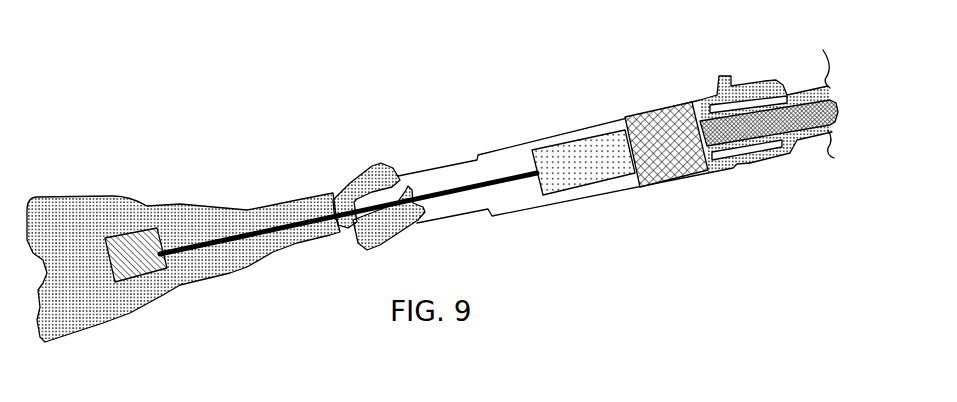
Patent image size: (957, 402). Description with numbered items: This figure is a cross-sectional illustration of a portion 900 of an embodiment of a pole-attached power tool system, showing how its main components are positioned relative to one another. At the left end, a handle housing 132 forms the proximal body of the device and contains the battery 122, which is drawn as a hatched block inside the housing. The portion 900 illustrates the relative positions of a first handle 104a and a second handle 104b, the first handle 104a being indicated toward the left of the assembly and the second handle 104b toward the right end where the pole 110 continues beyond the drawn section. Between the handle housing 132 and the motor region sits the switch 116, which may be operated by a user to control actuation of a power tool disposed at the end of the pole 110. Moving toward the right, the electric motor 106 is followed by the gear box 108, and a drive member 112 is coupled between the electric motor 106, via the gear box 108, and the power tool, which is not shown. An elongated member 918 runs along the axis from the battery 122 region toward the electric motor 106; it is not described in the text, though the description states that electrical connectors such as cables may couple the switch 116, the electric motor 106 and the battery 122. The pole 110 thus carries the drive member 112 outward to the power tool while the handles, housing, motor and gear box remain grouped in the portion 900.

The portion 900 is at (84, 134).
The first handle 104a is at (274, 180).
The second handle 104b is at (830, 172).
The handle housing 132 is at (113, 195).
The battery 122 is at (150, 279).
The tether wire 918 is at (280, 238).
The switch 116 is at (379, 165).
The electric motor 106 is at (585, 135).
The gear box 108 is at (657, 103).
The pole 110 is at (812, 90).
The drive member 112 is at (817, 127).